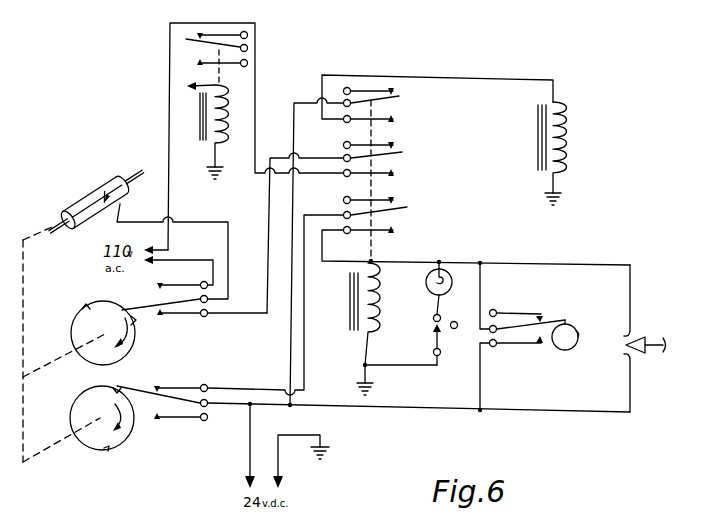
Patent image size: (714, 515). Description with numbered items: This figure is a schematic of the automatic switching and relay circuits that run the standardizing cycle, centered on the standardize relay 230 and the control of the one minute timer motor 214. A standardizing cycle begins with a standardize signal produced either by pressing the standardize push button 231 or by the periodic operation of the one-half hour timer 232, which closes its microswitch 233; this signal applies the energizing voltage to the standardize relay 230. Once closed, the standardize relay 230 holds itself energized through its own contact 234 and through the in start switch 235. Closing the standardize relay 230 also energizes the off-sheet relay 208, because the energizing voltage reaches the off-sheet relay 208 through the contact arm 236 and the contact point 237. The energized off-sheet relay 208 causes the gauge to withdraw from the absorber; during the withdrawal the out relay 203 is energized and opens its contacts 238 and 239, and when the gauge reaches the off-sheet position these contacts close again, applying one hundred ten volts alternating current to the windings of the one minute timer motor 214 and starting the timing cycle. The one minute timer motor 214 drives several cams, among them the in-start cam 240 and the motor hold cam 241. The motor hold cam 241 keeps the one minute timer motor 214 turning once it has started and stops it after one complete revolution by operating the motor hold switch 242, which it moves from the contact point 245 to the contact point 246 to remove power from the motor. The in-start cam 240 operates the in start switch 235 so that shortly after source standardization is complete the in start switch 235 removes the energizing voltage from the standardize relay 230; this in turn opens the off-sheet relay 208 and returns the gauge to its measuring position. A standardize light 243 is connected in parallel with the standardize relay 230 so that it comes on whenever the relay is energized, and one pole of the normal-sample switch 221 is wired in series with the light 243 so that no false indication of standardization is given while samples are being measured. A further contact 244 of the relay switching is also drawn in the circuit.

The out relay 203 is at (228, 132).
The off-sheet relay 208 is at (567, 134).
The one minute timer motor 214 is at (80, 195).
The normal-sample switch 221 is at (430, 340).
The standardize relay 230 is at (380, 312).
The standardize push button 231 is at (633, 328).
The one-half hour timer 232 is at (567, 351).
The microswitch 233 is at (512, 345).
The contact 234 is at (348, 233).
The in start switch 235 is at (137, 388).
The contact arm 236 is at (403, 98).
The contact point 237 is at (344, 121).
The contact 238 is at (253, 50).
The contact 239 is at (250, 35).
The in-start cam 240 is at (72, 403).
The motor hold cam 241 is at (73, 320).
The motor hold switch 242 is at (138, 303).
The standardize light 243 is at (431, 290).
The switch contact 244 is at (341, 214).
The contact point 245 is at (201, 281).
The contact point 246 is at (210, 316).